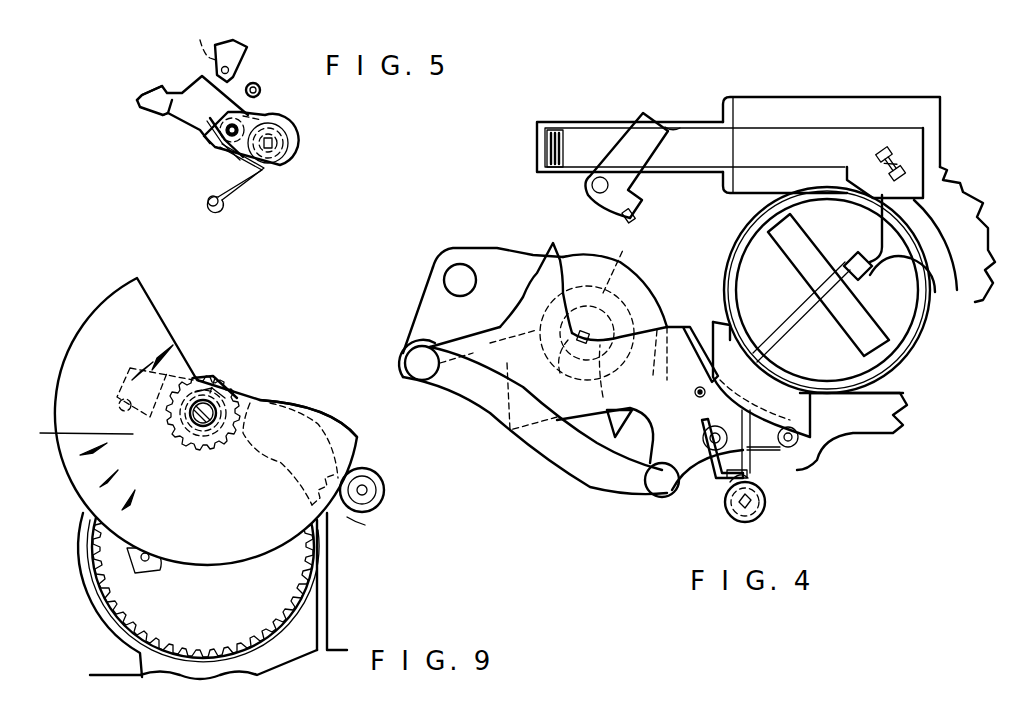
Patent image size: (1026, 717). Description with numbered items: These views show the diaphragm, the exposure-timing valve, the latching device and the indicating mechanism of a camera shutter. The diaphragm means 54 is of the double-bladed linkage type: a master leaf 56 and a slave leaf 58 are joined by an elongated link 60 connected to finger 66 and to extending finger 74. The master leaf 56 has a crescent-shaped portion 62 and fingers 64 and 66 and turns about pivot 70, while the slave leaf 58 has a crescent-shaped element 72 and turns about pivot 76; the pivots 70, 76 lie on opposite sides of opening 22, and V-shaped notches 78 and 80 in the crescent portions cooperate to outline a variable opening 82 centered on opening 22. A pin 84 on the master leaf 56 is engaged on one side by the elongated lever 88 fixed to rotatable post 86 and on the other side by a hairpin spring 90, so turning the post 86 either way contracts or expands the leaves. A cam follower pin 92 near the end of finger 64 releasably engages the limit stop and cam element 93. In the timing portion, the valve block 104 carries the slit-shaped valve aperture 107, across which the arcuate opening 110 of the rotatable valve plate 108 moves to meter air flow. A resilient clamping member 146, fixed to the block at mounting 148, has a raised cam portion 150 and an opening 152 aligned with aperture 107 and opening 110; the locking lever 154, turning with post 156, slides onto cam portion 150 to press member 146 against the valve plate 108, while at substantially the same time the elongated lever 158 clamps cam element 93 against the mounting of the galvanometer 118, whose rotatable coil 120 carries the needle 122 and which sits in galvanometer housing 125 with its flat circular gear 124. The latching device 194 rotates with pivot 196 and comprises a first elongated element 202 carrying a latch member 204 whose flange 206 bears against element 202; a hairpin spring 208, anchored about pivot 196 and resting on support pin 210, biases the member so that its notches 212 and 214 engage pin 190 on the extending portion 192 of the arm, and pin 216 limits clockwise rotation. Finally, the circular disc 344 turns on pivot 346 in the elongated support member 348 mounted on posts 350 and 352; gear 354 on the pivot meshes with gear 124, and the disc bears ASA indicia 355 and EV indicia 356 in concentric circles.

In FIG. 4, the opening 22 is at (611, 263).
In FIG. 4, the diaphragm means 54 is at (647, 273).
In FIG. 4, the master leaf 56 is at (677, 337).
In FIG. 4, the slave leaf 58 is at (498, 260).
In FIG. 4, the link 60 is at (590, 467).
In FIG. 4, the crescent-shaped portion 62 is at (533, 283).
In FIG. 4, the finger 64 is at (760, 450).
In FIG. 4, the finger 66 is at (688, 457).
In FIG. 4, the pivot 70 is at (697, 390).
In FIG. 4, the crescent-shaped element 72 is at (637, 375).
In FIG. 4, the extending finger 74 is at (433, 318).
In FIG. 4, the pivot 76 is at (450, 280).
In FIG. 4, the notch 78 is at (587, 343).
In FIG. 4, the notch 80 is at (622, 330).
In FIG. 4, the variable opening 82 is at (598, 312).
In FIG. 4, the pin 84 is at (727, 410).
In FIG. 4, the rotatable post 86 is at (735, 515).
In FIG. 4, the lever 88 is at (770, 385).
In FIG. 4, the hairpin spring 90 is at (730, 477).
In FIG. 4, the cam follower pin 92 is at (797, 453).
In FIG. 4, the cam element 93 is at (723, 357).
In FIG. 4, the valve block 104 is at (752, 110).
In FIG. 4, the valve aperture 107 is at (877, 170).
In FIG. 4, the valve plate 108 is at (977, 283).
In FIG. 4, the arcuate opening 110 is at (943, 230).
In FIG. 9, the galvanometer 118 is at (272, 586).
In FIG. 4, the galvanometer 118 is at (898, 313).
In FIG. 4, the rotatable coil 120 is at (817, 273).
In FIG. 4, the needle 122 is at (797, 322).
In FIG. 9, the flat circular gear 124 is at (317, 572).
In FIG. 9, the galvanometer housing 125 is at (92, 600).
In FIG. 4, the galvanometer housing 125 is at (907, 353).
In FIG. 4, the clamping member 146 is at (795, 135).
In FIG. 4, the mounting 148 is at (548, 153).
In FIG. 4, the cam portion 150 is at (592, 140).
In FIG. 4, the opening 152 is at (888, 148).
In FIG. 4, the locking lever 154 is at (643, 130).
In FIG. 4, the post 156 is at (592, 187).
In FIG. 4, the lever 158 is at (857, 437).
In FIG. 5, the pin 190 is at (194, 44).
In FIG. 5, the extending portion 192 is at (228, 50).
In FIG. 5, the latching device 194 is at (210, 147).
In FIG. 5, the pivot 196 is at (283, 145).
In FIG. 5, the elongated element 202 is at (281, 162).
In FIG. 5, the latch member 204 is at (172, 102).
In FIG. 5, the flange 206 is at (263, 113).
In FIG. 5, the hairpin spring 208 is at (243, 177).
In FIG. 5, the support pin 210 is at (215, 206).
In FIG. 5, the notch 212 is at (182, 92).
In FIG. 5, the notch 214 is at (155, 93).
In FIG. 5, the pin 216 is at (256, 87).
In FIG. 9, the circular disc 344 is at (347, 517).
In FIG. 9, the pivot 346 is at (210, 393).
In FIG. 9, the support member 348 is at (340, 395).
In FIG. 9, the post 350 is at (120, 400).
In FIG. 9, the post 352 is at (365, 488).
In FIG. 9, the gear 354 is at (217, 383).
In FIG. 9, the indicia 355 is at (130, 317).
In FIG. 9, the indicia 356 is at (67, 435).